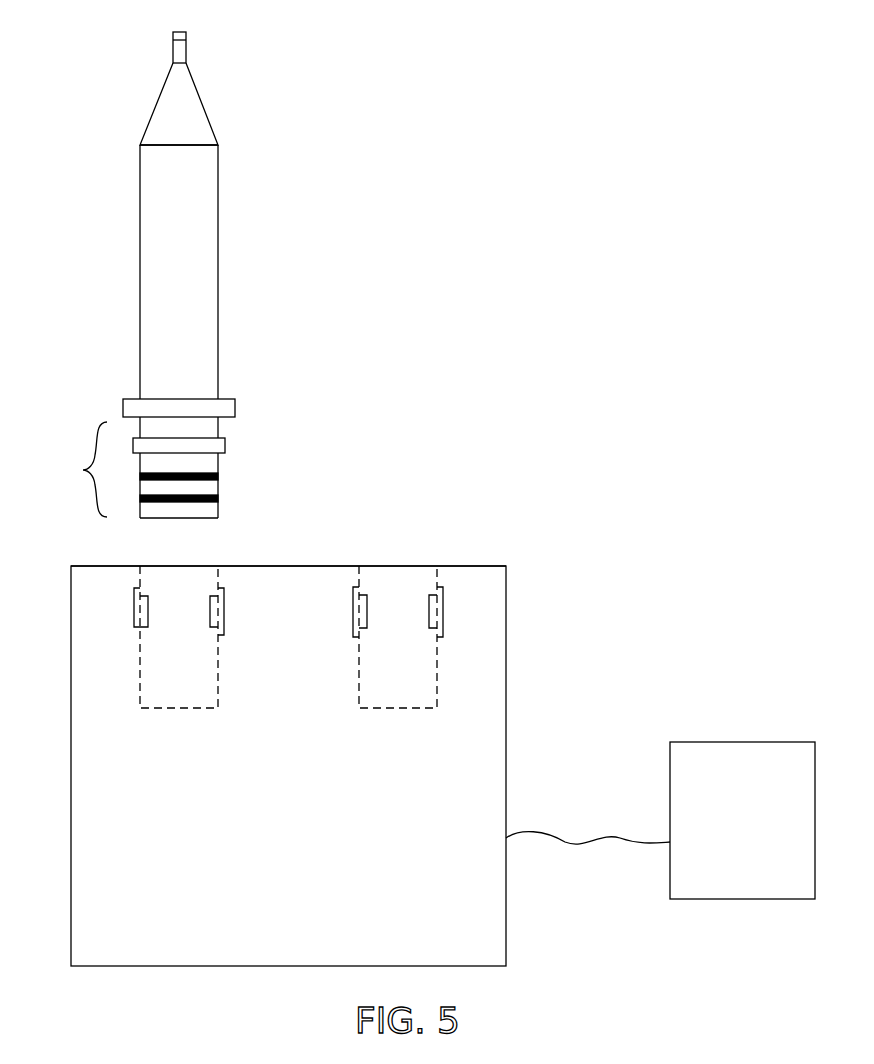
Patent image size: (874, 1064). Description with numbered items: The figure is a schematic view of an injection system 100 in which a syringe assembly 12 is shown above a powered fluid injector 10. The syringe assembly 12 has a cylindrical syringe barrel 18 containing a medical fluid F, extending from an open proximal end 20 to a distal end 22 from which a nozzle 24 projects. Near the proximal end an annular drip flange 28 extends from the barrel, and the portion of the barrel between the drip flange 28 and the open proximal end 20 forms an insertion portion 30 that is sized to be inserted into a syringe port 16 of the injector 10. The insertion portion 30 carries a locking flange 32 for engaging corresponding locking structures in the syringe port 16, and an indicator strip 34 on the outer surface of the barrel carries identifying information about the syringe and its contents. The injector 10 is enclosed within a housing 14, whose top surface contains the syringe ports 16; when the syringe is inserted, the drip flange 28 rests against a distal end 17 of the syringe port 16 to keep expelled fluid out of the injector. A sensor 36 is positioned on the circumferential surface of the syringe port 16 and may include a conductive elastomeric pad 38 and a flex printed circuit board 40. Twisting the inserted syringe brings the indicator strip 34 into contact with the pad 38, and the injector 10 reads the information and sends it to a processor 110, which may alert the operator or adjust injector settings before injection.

The injection system 100 is at (392, 170).
The syringe assembly 12 is at (116, 178).
The nozzle 24 is at (178, 52).
The distal end 22 is at (192, 105).
The syringe barrel 18 is at (218, 193).
The medical fluid F is at (158, 255).
The drip flange 28 is at (207, 410).
The insertion portion 30 is at (176, 478).
The locking flange 32 is at (220, 444).
The indicator strip 34 is at (213, 477).
The open proximal end 20 is at (200, 521).
The fluid injector 10 is at (528, 556).
The housing 14 is at (506, 730).
The distal end of the syringe port 17 is at (198, 566).
The syringe port 16 is at (181, 697).
The sensor 36 is at (120, 607).
The conductive elastomeric pad 38 is at (147, 600).
The flex printed circuit board 40 is at (136, 630).
The processor 110 is at (742, 742).